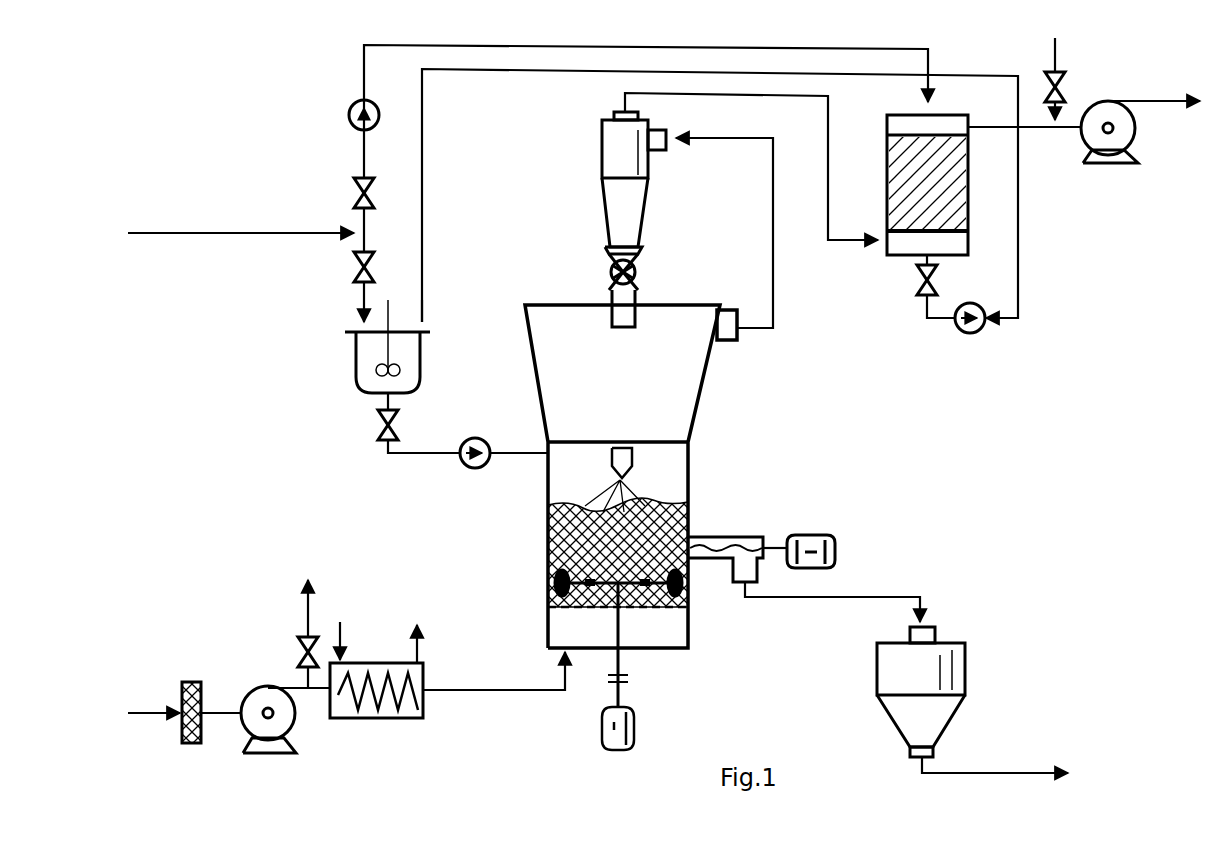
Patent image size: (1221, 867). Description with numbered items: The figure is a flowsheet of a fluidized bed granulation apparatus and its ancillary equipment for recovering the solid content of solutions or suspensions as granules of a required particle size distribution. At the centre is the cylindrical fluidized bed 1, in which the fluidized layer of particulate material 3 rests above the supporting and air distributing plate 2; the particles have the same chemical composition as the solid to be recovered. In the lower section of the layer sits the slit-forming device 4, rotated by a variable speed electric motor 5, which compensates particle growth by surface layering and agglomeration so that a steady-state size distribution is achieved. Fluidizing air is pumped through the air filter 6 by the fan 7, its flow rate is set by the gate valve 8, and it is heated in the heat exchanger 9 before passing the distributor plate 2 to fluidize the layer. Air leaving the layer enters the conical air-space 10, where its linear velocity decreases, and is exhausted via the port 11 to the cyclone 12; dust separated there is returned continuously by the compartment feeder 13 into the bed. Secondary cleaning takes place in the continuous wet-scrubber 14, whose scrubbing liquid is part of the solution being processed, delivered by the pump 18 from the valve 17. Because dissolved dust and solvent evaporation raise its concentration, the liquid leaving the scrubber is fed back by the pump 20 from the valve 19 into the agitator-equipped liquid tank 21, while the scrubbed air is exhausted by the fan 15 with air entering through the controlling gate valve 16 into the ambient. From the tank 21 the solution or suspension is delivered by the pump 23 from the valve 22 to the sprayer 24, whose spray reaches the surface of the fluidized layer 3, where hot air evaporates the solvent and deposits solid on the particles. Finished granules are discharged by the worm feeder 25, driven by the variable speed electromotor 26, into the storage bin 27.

The cylindrical fluidized bed 1 is at (690, 512).
The supporting and air distributing plate 2 is at (688, 620).
The fluidized layer of particulate material 3 is at (545, 545).
The slit-forming device 4 is at (600, 642).
The variable speed electric motor 5 is at (633, 728).
The air filter 6 is at (192, 680).
The fan 7 is at (273, 700).
The gate valve 8 is at (294, 650).
The heat exchanger 9 is at (366, 663).
The conical air-space 10 is at (680, 375).
The port 11 is at (727, 320).
The cyclone 12 is at (598, 195).
The compartment feeder 13 is at (605, 270).
The continuous wet-scrubber 14 is at (900, 186).
The fan 15 is at (1135, 140).
The controlling gate valve 16 is at (1062, 80).
The valve 17 is at (352, 192).
The pump 18 is at (348, 113).
The valve 19 is at (915, 283).
The pump 20 is at (982, 330).
The liquid tank 21 is at (352, 362).
The valve 22 is at (376, 428).
The pump 23 is at (476, 468).
The sprayer 24 is at (632, 470).
The worm feeder 25 is at (745, 530).
The variable speed electromotor 26 is at (837, 548).
The storage bin 27 is at (950, 668).